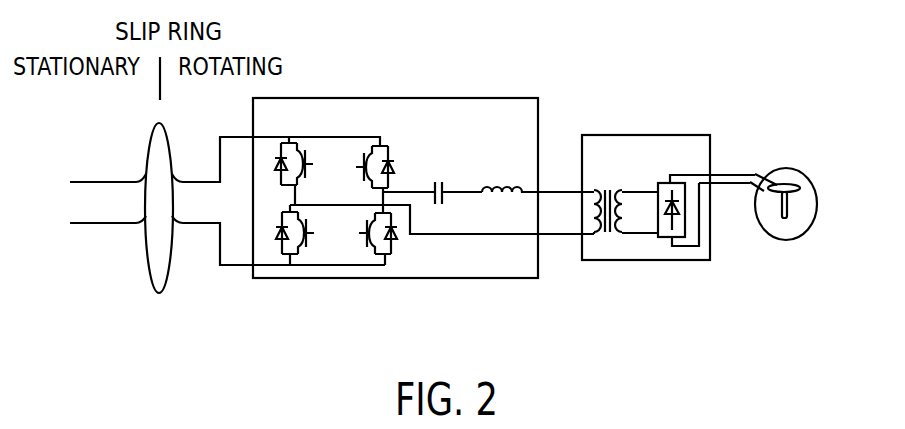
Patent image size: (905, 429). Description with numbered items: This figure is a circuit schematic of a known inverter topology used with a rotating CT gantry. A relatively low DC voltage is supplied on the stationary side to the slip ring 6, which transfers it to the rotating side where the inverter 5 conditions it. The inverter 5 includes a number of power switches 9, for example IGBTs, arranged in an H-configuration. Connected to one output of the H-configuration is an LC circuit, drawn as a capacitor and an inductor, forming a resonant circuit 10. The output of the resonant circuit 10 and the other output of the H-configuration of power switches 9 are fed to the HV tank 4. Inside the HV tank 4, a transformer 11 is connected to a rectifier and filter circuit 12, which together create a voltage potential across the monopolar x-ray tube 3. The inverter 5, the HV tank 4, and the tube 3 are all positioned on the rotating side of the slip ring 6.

The monopolar x-ray tube 3 is at (802, 233).
The HV tank 4 is at (695, 135).
The inverter 5 is at (468, 98).
The slip ring 6 is at (168, 284).
The power switches 9 is at (372, 177).
The resonant circuit 10 is at (477, 146).
The transformer 11 is at (612, 240).
The rectifier and filter circuit 12 is at (664, 239).